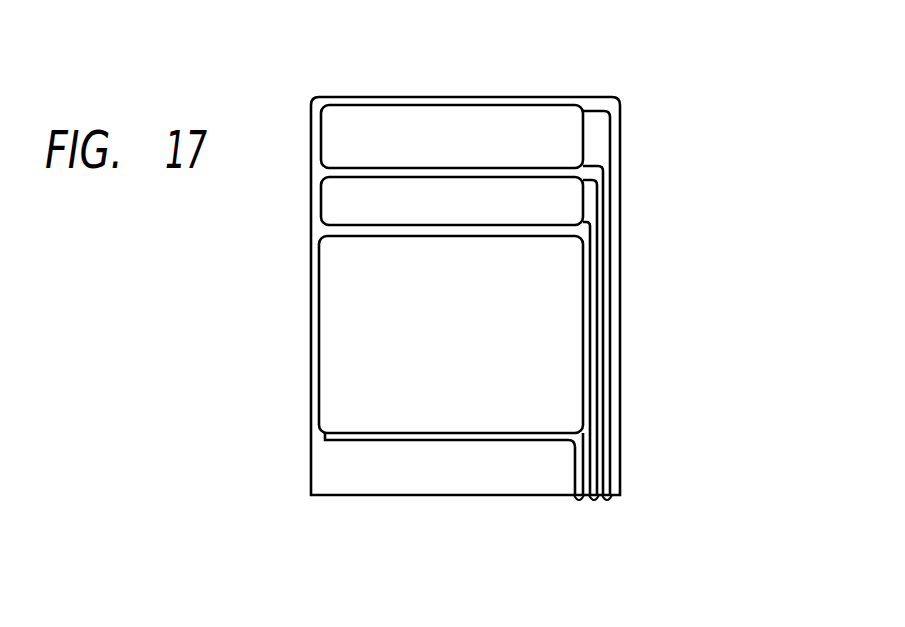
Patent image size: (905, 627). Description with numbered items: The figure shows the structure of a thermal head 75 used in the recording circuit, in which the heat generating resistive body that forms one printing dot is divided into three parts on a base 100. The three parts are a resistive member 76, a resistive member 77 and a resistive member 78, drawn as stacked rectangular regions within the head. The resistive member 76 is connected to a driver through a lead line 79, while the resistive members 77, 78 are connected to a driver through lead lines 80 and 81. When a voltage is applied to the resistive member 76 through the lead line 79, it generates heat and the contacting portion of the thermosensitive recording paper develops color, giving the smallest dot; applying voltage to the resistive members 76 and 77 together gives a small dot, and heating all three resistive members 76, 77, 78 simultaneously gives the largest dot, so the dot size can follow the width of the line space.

The thermal head 75 is at (468, 496).
The resistive member 76 is at (335, 300).
The resistive member 77 is at (335, 205).
The resistive member 78 is at (540, 118).
The lead line 79 is at (577, 503).
The lead line 80 is at (593, 503).
The lead line 81 is at (607, 503).
The base 100 is at (332, 455).